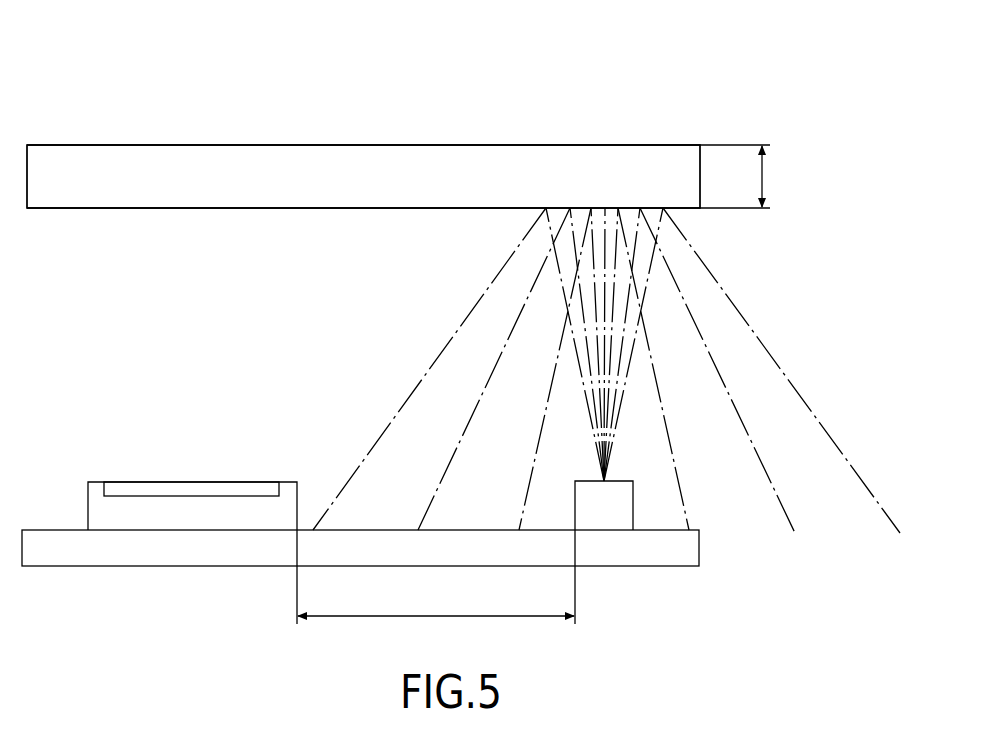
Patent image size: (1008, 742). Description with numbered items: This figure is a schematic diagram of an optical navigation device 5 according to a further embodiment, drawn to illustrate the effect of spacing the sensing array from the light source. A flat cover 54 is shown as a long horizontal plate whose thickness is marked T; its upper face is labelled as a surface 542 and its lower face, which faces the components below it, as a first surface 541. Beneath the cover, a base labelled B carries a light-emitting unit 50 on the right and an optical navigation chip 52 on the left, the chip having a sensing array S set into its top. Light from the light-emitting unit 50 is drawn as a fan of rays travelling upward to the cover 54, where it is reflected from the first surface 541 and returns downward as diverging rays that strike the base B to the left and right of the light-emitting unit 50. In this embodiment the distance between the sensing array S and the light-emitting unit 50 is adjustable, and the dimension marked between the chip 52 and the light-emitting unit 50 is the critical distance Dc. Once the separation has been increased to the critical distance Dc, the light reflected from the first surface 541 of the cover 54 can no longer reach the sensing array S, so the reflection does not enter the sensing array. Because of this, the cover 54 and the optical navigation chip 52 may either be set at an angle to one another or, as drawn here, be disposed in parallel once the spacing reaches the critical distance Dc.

The optical sensing module 5 is at (43, 40).
The light transmissive plate 54 is at (441, 163).
The upper surface of plate 542 is at (655, 144).
The lower surface of plate 541 is at (688, 211).
The sensor carrier 52 is at (112, 511).
The light source 50 is at (609, 518).
The sensing array S is at (146, 490).
The substrate B is at (186, 551).
The plate thickness T is at (735, 176).
The critical distance Dc is at (436, 577).